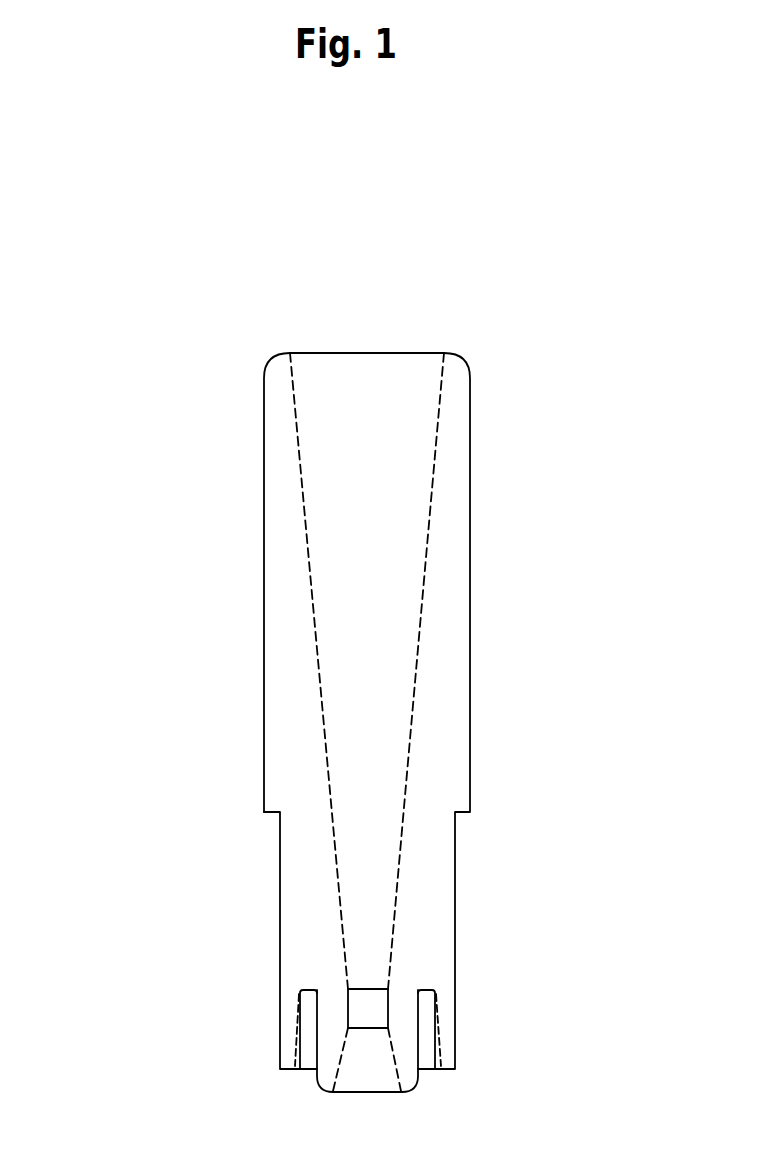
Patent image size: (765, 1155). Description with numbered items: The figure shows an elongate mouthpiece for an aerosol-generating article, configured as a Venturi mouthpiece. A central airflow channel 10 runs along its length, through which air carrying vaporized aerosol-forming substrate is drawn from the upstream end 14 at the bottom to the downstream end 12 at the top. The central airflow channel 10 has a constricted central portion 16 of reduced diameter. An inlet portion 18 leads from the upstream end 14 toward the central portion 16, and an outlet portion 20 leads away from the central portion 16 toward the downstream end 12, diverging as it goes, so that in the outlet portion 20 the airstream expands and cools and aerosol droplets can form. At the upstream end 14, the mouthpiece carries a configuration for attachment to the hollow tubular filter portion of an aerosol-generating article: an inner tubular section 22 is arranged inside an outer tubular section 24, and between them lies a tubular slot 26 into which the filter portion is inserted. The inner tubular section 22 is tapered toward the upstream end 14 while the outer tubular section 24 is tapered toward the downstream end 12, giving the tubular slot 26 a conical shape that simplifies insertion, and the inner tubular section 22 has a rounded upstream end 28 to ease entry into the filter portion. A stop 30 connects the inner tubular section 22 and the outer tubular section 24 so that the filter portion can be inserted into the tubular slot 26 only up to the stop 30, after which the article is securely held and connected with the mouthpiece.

The central airflow channel 10 is at (368, 758).
The downstream end 12 is at (250, 365).
The upstream end 14 is at (260, 1078).
The central portion 16 is at (363, 1007).
The inlet portion 18 is at (370, 1063).
The outlet portion 20 is at (395, 497).
The inner tubular section 22 is at (400, 1007).
The outer tubular section 24 is at (288, 1018).
The tubular slot 26 is at (307, 1052).
The rounded upstream end 28 is at (407, 1085).
The stop 30 is at (427, 990).